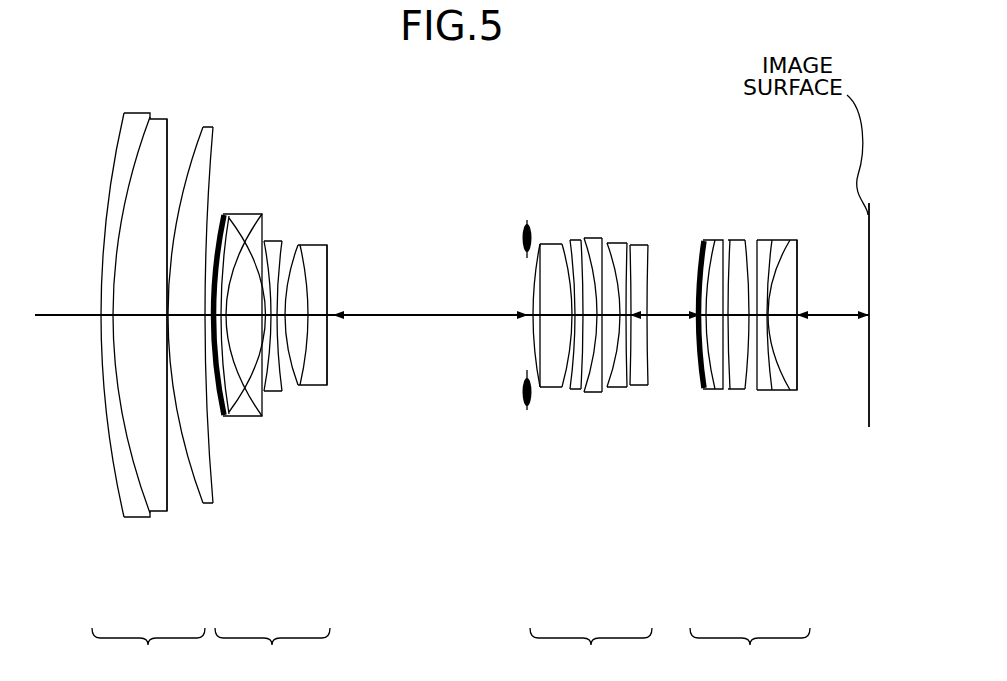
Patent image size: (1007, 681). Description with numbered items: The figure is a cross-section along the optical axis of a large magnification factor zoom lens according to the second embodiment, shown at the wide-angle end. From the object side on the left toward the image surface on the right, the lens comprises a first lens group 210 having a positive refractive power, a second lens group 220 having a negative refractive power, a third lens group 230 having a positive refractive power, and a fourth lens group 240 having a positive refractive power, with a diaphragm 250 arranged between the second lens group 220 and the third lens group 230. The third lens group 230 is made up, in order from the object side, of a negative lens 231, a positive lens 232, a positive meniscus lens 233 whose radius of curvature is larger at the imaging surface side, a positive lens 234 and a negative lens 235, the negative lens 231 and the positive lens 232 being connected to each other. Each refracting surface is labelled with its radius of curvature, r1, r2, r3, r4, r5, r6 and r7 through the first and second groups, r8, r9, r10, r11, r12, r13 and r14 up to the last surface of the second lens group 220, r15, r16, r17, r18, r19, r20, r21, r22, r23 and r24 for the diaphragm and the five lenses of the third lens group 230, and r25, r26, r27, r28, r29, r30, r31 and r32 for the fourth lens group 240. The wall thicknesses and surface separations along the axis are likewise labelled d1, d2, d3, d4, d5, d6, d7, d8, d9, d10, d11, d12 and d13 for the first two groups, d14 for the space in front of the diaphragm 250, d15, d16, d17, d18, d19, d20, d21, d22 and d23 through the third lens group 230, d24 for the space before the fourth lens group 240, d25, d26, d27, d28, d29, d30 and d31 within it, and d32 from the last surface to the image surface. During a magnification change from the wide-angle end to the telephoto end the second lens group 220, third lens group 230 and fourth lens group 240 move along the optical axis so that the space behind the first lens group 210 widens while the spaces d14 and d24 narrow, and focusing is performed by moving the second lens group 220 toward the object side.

The first lens group 210 is at (158, 352).
The second lens group 220 is at (309, 376).
The third lens group 230 is at (562, 386).
The fourth lens group 240 is at (765, 386).
The diaphragm 250 is at (524, 242).
The negative lens 231 is at (507, 271).
The positive lens 232 is at (537, 242).
The positive meniscus lens 233 is at (524, 252).
The positive lens 234 is at (651, 255).
The negative lens 235 is at (665, 277).
The radius of curvature r1 is at (108, 158).
The radius of curvature r2 is at (147, 132).
The radius of curvature r3 is at (155, 125).
The radius of curvature r4 is at (199, 137).
The radius of curvature r5 is at (218, 137).
The radius of curvature r6 is at (221, 205).
The radius of curvature r7 is at (230, 212).
The radius of curvature r8 is at (262, 212).
The radius of curvature r9 is at (278, 223).
The radius of curvature r10 is at (288, 243).
The radius of curvature r11 is at (292, 240).
The radius of curvature r12 is at (298, 242).
The radius of curvature r13 is at (318, 244).
The radius of curvature r14 is at (328, 273).
The radius of curvature r15 is at (536, 248).
The radius of curvature r16 is at (535, 303).
The radius of curvature r17 is at (570, 241).
The radius of curvature r18 is at (582, 258).
The radius of curvature r19 is at (586, 239).
The radius of curvature r20 is at (611, 252).
The radius of curvature r21 is at (608, 243).
The radius of curvature r22 is at (653, 300).
The radius of curvature r23 is at (631, 245).
The radius of curvature r24 is at (630, 278).
The radius of curvature r25 is at (702, 238).
The radius of curvature r26 is at (714, 238).
The radius of curvature r27 is at (729, 238).
The radius of curvature r28 is at (742, 238).
The radius of curvature r29 is at (755, 238).
The radius of curvature r30 is at (770, 240).
The radius of curvature r31 is at (791, 240).
The radius of curvature r32 is at (802, 240).
The surface separation d1 is at (104, 330).
The surface separation d2 is at (143, 323).
The surface separation d3 is at (169, 335).
The surface separation d4 is at (186, 330).
The surface separation d5 is at (229, 420).
The surface separation d6 is at (233, 420).
The surface separation d7 is at (240, 405).
The surface separation d8 is at (278, 403).
The surface separation d9 is at (292, 388).
The surface separation d10 is at (300, 397).
The surface separation d11 is at (308, 393).
The surface separation d12 is at (325, 387).
The surface separation d13 is at (325, 350).
The surface separation d14 is at (437, 320).
The surface separation d15 is at (527, 330).
The surface separation d16 is at (538, 390).
The surface separation d17 is at (557, 390).
The surface separation d18 is at (587, 395).
The surface separation d19 is at (598, 392).
The surface separation d20 is at (596, 392).
The surface separation d21 is at (618, 392).
The surface separation d22 is at (636, 390).
The surface separation d23 is at (648, 390).
The surface separation d24 is at (666, 322).
The surface separation d25 is at (717, 392).
The surface separation d26 is at (712, 392).
The surface separation d27 is at (735, 392).
The surface separation d28 is at (750, 392).
The surface separation d29 is at (760, 392).
The surface separation d30 is at (773, 392).
The surface separation d31 is at (805, 392).
The surface separation d32 is at (840, 322).